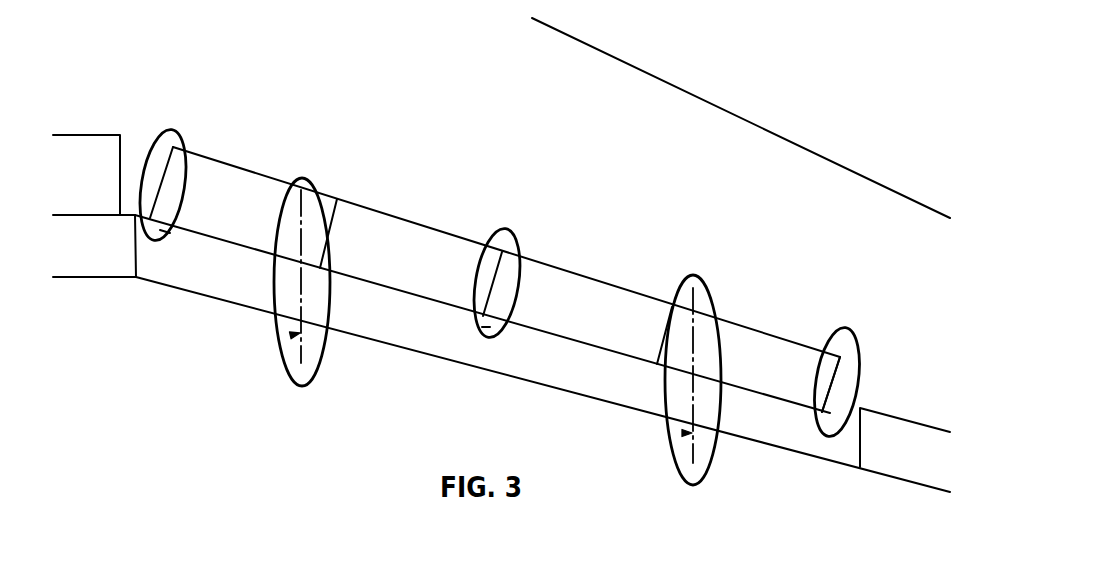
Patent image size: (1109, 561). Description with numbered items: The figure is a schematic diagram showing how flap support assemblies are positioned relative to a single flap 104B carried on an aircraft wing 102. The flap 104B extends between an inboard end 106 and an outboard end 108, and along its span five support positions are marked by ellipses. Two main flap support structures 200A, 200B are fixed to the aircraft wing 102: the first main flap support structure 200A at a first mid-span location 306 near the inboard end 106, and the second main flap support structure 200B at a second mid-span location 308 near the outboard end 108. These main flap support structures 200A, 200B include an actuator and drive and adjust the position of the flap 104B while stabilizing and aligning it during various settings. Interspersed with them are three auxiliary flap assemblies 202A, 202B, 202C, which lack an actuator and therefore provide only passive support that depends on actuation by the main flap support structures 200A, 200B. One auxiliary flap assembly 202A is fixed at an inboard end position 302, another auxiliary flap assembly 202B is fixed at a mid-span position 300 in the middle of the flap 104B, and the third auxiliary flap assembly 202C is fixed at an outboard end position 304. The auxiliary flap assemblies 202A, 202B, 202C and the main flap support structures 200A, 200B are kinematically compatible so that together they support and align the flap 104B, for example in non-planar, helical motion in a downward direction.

The aircraft wing 102 is at (716, 88).
The flap 104B is at (397, 322).
The inboard end 106 is at (63, 147).
The outboard end 108 is at (845, 337).
The main flap support structure 200A is at (292, 334).
The main flap support structure 200B is at (684, 433).
The auxiliary flap assembly 202A is at (152, 188).
The auxiliary flap assembly 202B is at (501, 303).
The auxiliary flap assembly 202C is at (838, 406).
The mid-span position 300 is at (480, 326).
The inboard end position 302 is at (177, 243).
The outboard end position 304 is at (835, 427).
The first mid-span location 306 is at (298, 372).
The second mid-span location 308 is at (683, 453).